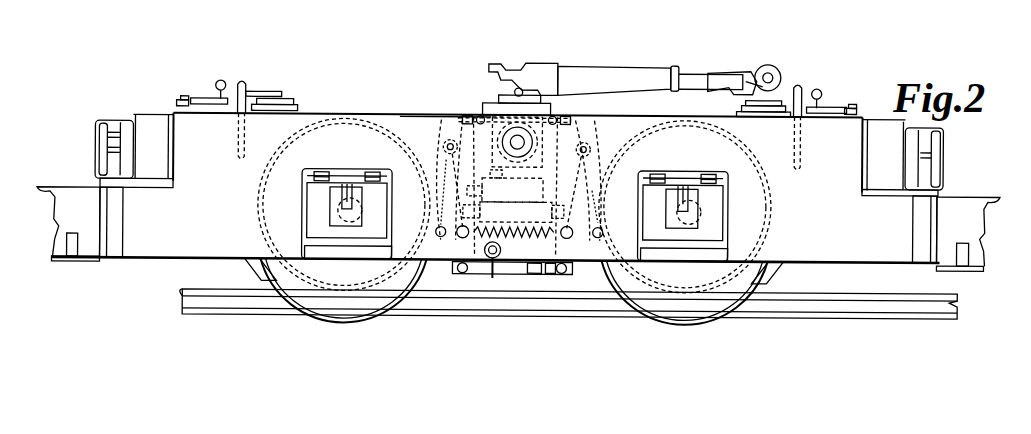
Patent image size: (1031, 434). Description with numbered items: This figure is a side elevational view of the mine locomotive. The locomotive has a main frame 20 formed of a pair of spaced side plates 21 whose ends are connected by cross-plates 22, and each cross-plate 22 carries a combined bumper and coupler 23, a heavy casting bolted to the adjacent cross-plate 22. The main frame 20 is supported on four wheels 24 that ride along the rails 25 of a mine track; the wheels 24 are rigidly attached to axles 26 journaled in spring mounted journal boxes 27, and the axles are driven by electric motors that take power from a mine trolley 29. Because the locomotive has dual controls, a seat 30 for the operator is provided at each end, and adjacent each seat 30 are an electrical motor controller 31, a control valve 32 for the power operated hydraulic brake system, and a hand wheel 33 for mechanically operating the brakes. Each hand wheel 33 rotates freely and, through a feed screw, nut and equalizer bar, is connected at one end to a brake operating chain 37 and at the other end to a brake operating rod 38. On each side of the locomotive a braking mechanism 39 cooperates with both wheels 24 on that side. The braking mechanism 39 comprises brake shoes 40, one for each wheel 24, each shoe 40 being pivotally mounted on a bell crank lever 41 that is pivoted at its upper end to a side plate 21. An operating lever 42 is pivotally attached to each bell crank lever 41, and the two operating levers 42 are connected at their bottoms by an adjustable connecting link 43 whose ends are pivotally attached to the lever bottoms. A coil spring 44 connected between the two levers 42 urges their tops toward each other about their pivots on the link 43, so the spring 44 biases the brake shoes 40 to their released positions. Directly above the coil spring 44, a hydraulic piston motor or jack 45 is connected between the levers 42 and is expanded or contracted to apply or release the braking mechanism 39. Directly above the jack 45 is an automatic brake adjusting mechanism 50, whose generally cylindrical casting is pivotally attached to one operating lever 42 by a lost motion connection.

The main frame 20 is at (356, 104).
The side plate 21 is at (620, 147).
The cross-plate 22 is at (113, 223).
The combined bumper and coupler 23 is at (518, 229).
The wheel 24 is at (367, 277).
The rail 25 is at (843, 308).
The axle 26 is at (354, 206).
The journal box 27 is at (318, 198).
The mine trolley 29 is at (632, 73).
The seat 30 is at (142, 178).
The electrical motor controller 31 is at (217, 100).
The control valve 32 is at (288, 92).
The hand wheel 33 is at (239, 90).
The brake operating chain 37 is at (464, 113).
The brake operating rod 38 is at (571, 118).
The braking mechanism 39 is at (603, 140).
The brake shoe 40 is at (514, 278).
The bell crank lever 41 is at (443, 150).
The operating lever 42 is at (450, 130).
The adjustable connecting link 43 is at (517, 264).
The coil spring 44 is at (511, 230).
The hydraulic piston motor or jack 45 is at (536, 209).
The automatic brake adjusting mechanism 50 is at (548, 177).